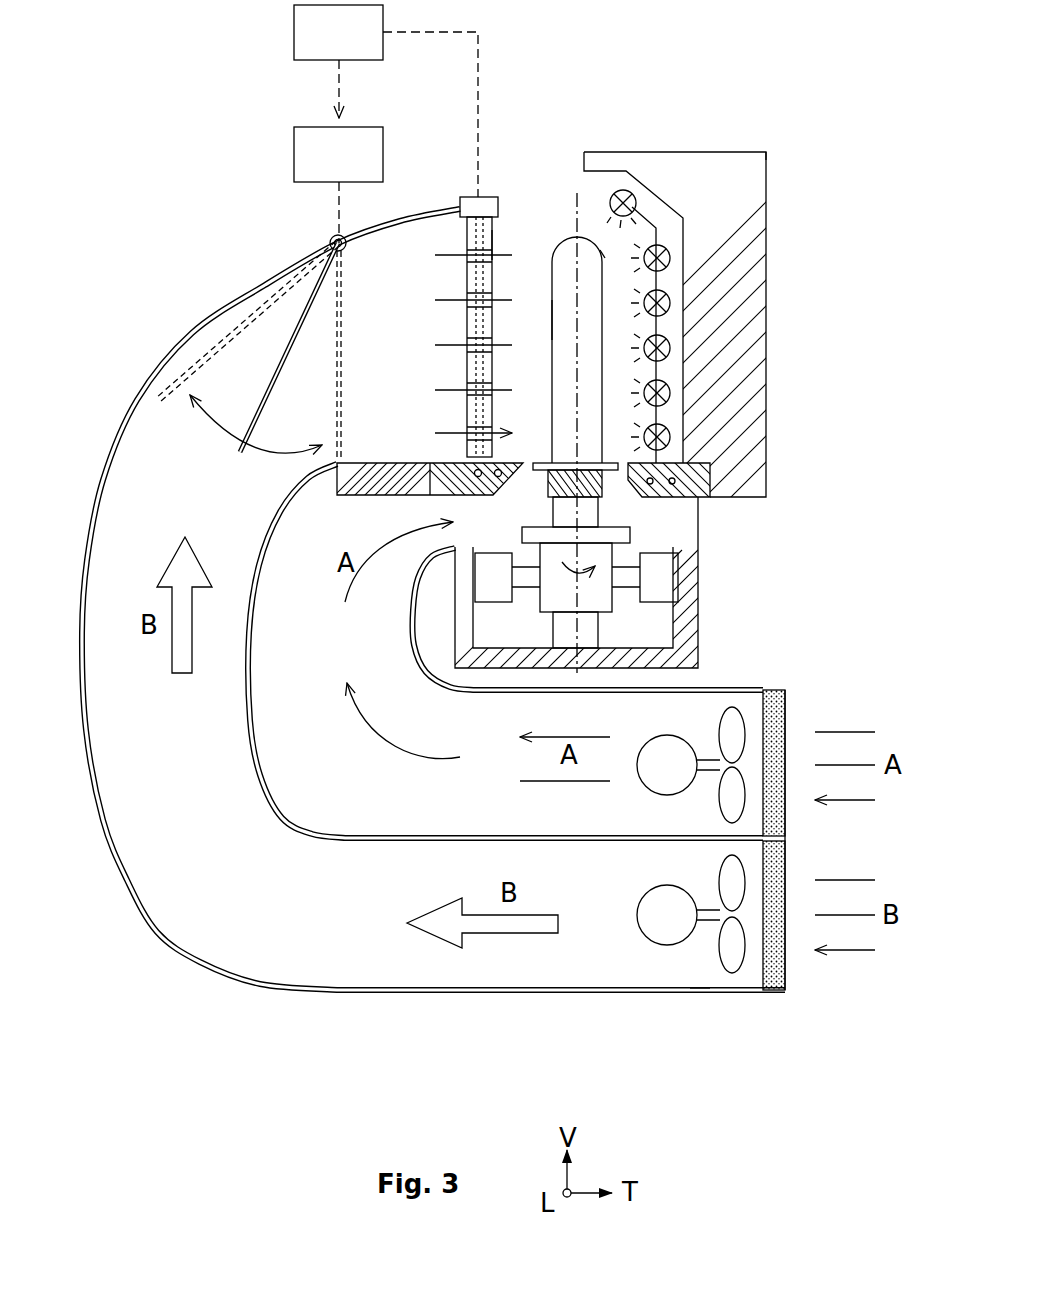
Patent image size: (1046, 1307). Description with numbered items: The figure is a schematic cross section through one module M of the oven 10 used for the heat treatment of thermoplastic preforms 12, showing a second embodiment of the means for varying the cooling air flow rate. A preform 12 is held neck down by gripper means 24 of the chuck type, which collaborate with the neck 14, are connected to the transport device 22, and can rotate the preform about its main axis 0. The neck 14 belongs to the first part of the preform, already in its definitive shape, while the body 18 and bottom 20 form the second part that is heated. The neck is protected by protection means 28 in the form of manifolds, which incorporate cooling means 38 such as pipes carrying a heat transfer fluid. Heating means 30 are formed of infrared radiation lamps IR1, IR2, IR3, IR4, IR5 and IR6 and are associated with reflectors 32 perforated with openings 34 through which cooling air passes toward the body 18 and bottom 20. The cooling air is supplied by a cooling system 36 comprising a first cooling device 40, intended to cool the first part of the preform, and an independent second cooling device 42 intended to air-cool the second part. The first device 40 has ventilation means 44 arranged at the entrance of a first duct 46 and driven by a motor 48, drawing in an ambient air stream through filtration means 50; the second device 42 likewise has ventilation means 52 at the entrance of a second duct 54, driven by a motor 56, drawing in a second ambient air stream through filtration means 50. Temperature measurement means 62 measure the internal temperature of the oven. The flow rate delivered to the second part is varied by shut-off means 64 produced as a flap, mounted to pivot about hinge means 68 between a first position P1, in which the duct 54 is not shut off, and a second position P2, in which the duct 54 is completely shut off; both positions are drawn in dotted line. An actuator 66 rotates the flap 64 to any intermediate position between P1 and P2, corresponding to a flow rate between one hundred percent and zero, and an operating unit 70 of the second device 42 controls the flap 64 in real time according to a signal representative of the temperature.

The oven 10 is at (790, 152).
The thermoplastic preform 12 is at (606, 256).
The neck 14 is at (598, 490).
The body 18 is at (553, 313).
The bottom 20 is at (563, 240).
The transport device 22 is at (662, 585).
The gripper means 24 is at (583, 518).
The protection means 28 is at (445, 485).
The heating means 30 is at (752, 330).
The reflectors 32 is at (475, 283).
The openings 34 is at (487, 242).
The cooling system 36 is at (157, 932).
The cooling means 38 is at (676, 481).
The first cooling device 40 is at (759, 748).
The second cooling device 42 is at (736, 951).
The ventilation means 44 is at (733, 740).
The first duct 46 is at (700, 690).
The motor 48 is at (683, 790).
The filtration means 50 is at (773, 700).
The ventilation means 52 is at (735, 955).
The second duct 54 is at (697, 970).
The motor 56 is at (660, 935).
The temperature measurement means 62 is at (472, 204).
The shut-off means 64 is at (280, 362).
The actuator 66 is at (338, 185).
The hinge means 68 is at (331, 238).
The operating unit 70 is at (386, 101).
The main axis 0 is at (577, 198).
The infrared radiation lamp IR1 is at (670, 437).
The infrared radiation lamp IR2 is at (670, 393).
The infrared radiation lamp IR3 is at (670, 348).
The infrared radiation lamp IR4 is at (670, 303).
The infrared radiation lamp IR5 is at (670, 258).
The infrared radiation lamp IR6 is at (634, 192).
The first position P1 is at (198, 362).
The second position P2 is at (345, 402).
The module M is at (250, 235).